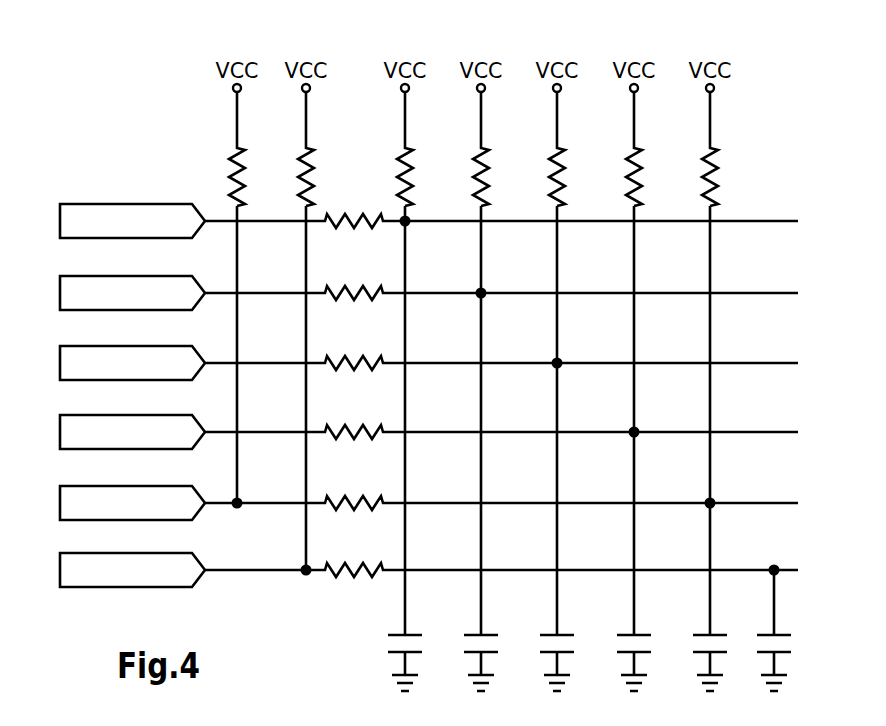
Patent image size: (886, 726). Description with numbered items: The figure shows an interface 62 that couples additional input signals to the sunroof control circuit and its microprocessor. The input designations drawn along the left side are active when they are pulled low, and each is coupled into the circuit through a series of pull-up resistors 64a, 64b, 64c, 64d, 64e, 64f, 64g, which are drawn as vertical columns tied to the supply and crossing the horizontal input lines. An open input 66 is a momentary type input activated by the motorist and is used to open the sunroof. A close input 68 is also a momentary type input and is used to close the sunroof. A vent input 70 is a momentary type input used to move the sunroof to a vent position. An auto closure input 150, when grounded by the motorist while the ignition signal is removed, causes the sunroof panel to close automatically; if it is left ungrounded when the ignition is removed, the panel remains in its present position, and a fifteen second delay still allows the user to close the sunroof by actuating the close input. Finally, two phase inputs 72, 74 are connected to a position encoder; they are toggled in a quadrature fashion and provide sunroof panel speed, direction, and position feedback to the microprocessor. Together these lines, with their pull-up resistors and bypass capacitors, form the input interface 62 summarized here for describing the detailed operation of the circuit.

The interface 62 is at (798, 400).
The pull-up resistor 64a is at (234, 183).
The pull-up resistor 64b is at (312, 154).
The pull-up resistor 64c is at (408, 153).
The pull-up resistor 64d is at (486, 167).
The pull-up resistor 64e is at (564, 170).
The pull-up resistor 64f is at (641, 170).
The pull-up resistor 64g is at (716, 176).
The open input 66 is at (113, 205).
The close input 68 is at (88, 276).
The vent input 70 is at (82, 346).
The auto closure input 150 is at (86, 415).
The phase input 72 is at (73, 486).
The phase input 74 is at (73, 553).